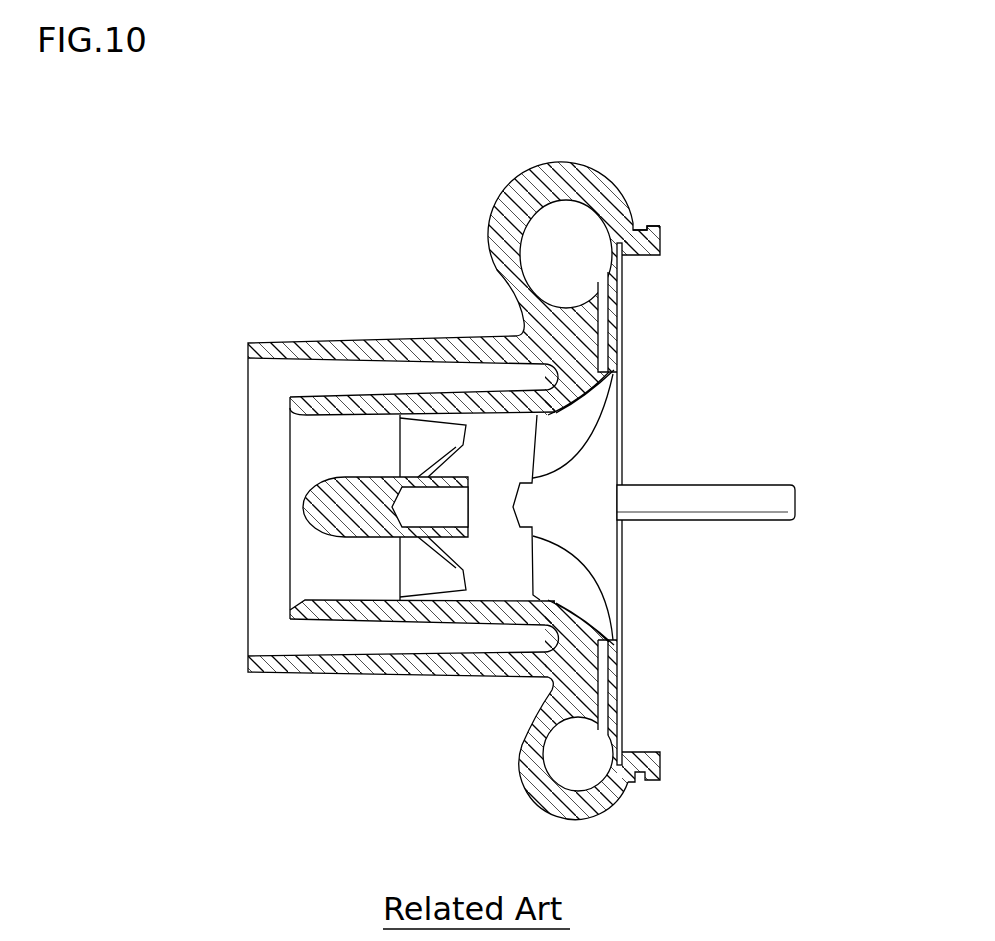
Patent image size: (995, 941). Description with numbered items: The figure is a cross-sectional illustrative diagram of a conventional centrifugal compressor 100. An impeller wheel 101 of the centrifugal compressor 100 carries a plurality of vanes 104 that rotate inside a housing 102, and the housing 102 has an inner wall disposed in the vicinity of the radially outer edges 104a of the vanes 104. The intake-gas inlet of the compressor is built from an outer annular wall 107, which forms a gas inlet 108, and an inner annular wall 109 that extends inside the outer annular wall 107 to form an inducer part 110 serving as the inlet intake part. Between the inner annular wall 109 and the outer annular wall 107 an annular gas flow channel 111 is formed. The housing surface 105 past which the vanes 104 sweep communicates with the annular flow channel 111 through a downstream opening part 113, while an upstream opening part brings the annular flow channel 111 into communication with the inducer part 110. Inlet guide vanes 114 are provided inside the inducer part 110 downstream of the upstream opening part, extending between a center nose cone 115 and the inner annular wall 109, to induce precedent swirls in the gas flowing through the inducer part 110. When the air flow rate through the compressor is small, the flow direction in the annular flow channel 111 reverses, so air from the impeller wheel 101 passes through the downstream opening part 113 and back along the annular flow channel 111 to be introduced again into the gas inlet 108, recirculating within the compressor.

The centrifugal compressor 100 is at (637, 150).
The impeller wheel 101 is at (600, 549).
The housing 102 is at (560, 174).
The vanes 104 is at (663, 504).
The radially outer edges 104a is at (598, 400).
The housing surface 105 is at (572, 415).
The outer annular wall 107 is at (367, 339).
The gas inlet 108 is at (361, 503).
The inner annular wall 109 is at (320, 395).
The inducer part 110 is at (338, 580).
The annular gas flow channel 111 is at (468, 385).
The downstream opening part 113 is at (565, 440).
The inlet guide vanes 114 is at (425, 578).
The center nose cone 115 is at (305, 503).